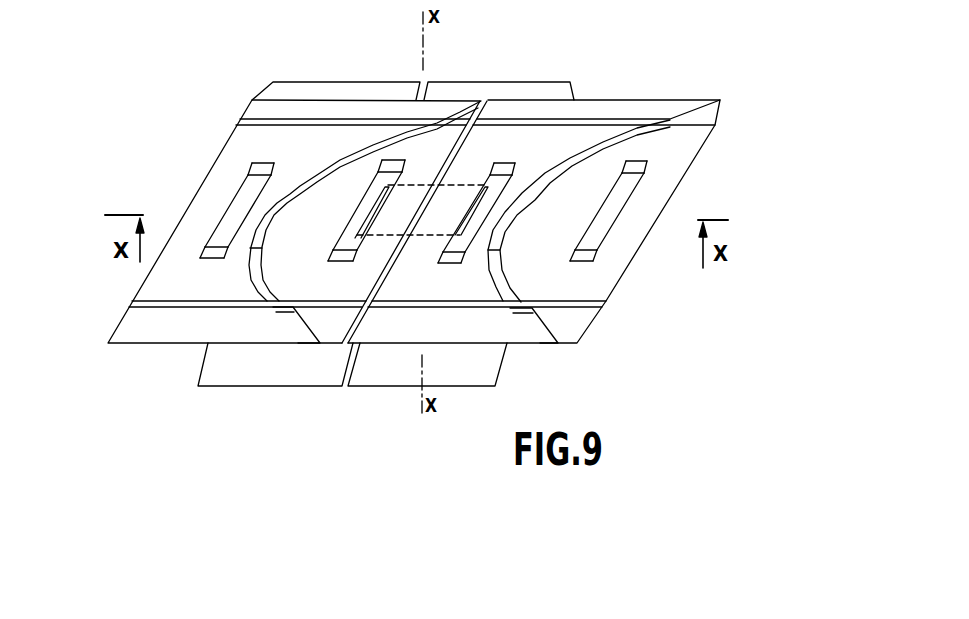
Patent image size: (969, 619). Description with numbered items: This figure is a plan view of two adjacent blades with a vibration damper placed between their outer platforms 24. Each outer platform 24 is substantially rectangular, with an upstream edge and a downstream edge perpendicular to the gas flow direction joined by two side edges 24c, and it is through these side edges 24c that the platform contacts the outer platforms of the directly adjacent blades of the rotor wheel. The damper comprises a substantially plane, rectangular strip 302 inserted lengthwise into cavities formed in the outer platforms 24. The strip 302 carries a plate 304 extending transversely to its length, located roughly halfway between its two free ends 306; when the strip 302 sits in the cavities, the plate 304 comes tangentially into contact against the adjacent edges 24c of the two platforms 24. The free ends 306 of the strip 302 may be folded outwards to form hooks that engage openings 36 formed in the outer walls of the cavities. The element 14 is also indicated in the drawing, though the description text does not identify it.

The outer platform 24 is at (200, 161).
The side edge 24c is at (480, 106).
The opening 36 is at (242, 193).
The strip 302 is at (371, 169).
The plate 304 is at (444, 171).
The free end 306 is at (353, 234).
The connecting tab 14 is at (282, 326).